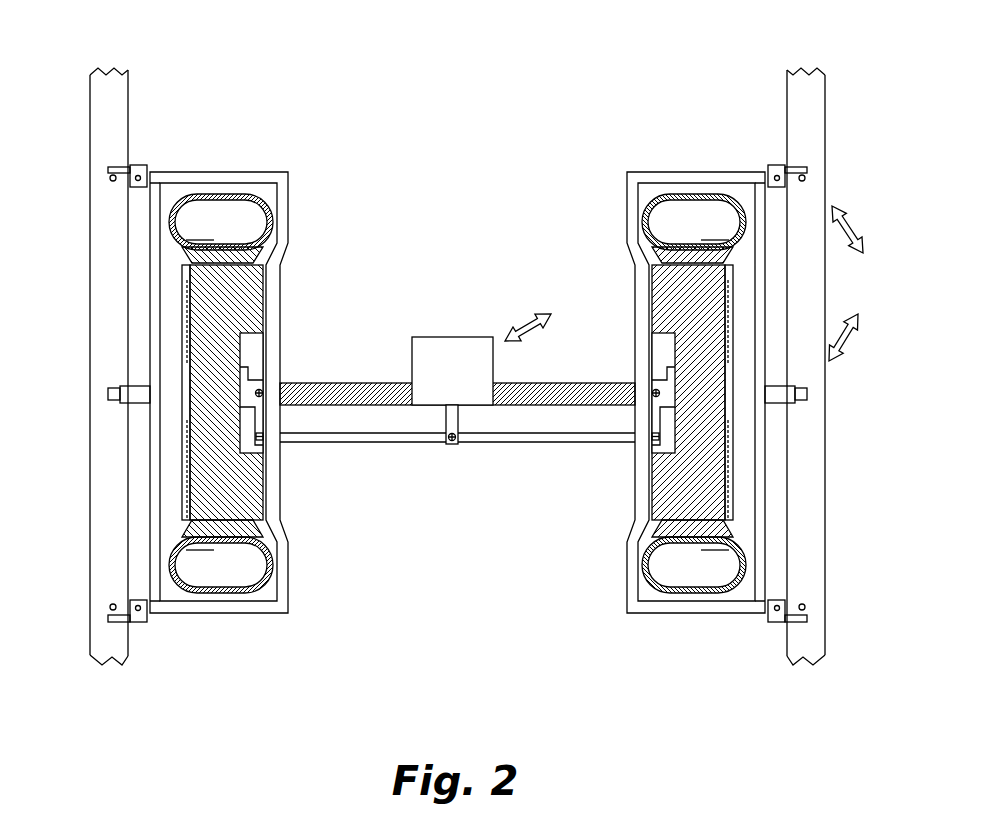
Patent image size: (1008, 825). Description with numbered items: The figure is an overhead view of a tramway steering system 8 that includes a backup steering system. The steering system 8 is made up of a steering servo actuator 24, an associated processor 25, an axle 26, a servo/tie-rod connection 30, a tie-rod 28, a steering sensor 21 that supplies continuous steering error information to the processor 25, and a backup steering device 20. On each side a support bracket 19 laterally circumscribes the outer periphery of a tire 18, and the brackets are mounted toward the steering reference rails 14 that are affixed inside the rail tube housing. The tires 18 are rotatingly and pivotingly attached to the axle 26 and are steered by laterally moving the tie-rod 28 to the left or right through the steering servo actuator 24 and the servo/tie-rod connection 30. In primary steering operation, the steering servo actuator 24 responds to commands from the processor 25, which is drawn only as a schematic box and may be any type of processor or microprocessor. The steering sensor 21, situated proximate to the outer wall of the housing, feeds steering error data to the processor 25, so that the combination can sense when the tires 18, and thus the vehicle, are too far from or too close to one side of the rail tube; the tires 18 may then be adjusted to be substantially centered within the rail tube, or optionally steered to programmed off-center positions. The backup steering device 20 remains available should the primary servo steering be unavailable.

The steering system 8 is at (498, 120).
The steering reference rail 14 is at (91, 130).
The tire 18 is at (180, 196).
The support bracket 19 is at (276, 172).
The backup steering device 20 is at (140, 162).
The steering sensor 21 is at (112, 384).
The steering servo actuator 24 is at (455, 337).
The processor 25 is at (571, 316).
The axle 26 is at (320, 383).
The tie-rod 28 is at (337, 443).
The servo/tie-rod connection 30 is at (452, 448).